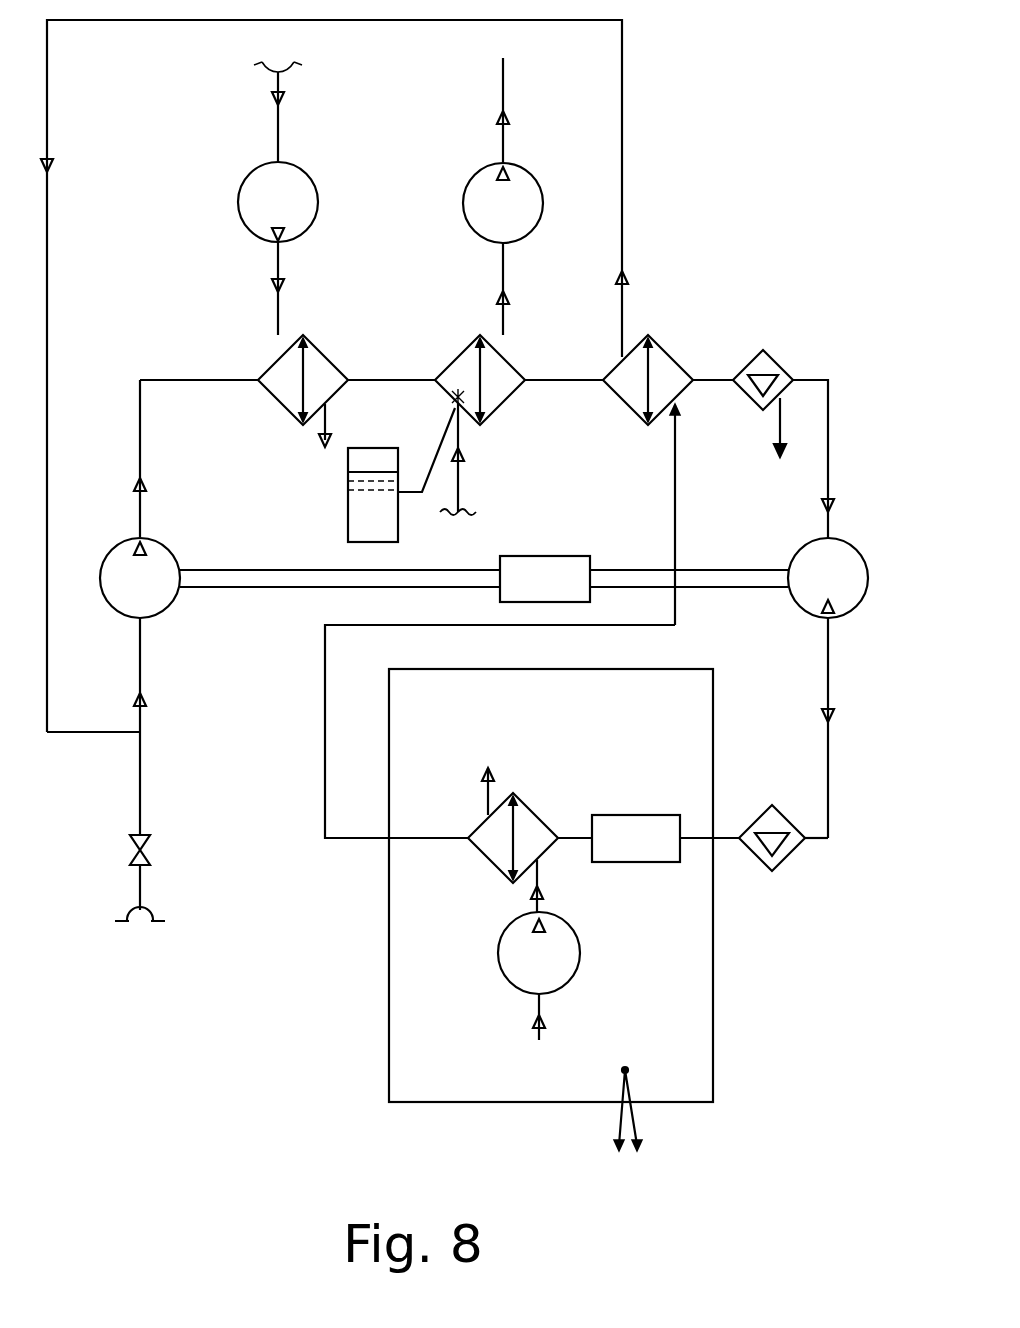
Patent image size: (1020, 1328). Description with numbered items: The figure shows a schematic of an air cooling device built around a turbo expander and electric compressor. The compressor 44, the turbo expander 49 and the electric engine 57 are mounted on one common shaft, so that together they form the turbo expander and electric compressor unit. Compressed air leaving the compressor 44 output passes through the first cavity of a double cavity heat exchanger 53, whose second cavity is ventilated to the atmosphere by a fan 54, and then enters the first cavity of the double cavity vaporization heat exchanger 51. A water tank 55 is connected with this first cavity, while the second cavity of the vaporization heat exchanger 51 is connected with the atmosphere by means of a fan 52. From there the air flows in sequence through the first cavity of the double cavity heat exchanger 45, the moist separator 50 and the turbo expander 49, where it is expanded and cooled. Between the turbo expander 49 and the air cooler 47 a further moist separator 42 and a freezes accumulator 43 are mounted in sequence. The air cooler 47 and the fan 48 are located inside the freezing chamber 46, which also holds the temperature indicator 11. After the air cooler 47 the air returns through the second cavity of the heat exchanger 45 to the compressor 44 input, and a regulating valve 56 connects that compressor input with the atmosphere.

The temperature indicator 11 is at (640, 1125).
The moist separator 42 is at (800, 862).
The freezes accumulator 43 is at (640, 815).
The compressor 44 is at (157, 558).
The double cavity heat exchanger 45 is at (668, 368).
The freezing chamber 46 is at (395, 907).
The air cooler 47 is at (530, 805).
The fan 48 is at (563, 960).
The turbo expander 49 is at (848, 561).
The moist separator 50 is at (776, 368).
The double cavity vaporization heat exchanger 51 is at (505, 378).
The fan 52 is at (483, 180).
The double cavity heat exchanger 53 is at (275, 370).
The fan 54 is at (250, 182).
The water tank 55 is at (348, 516).
The regulating valve 56 is at (150, 835).
The electric engine 57 is at (548, 556).